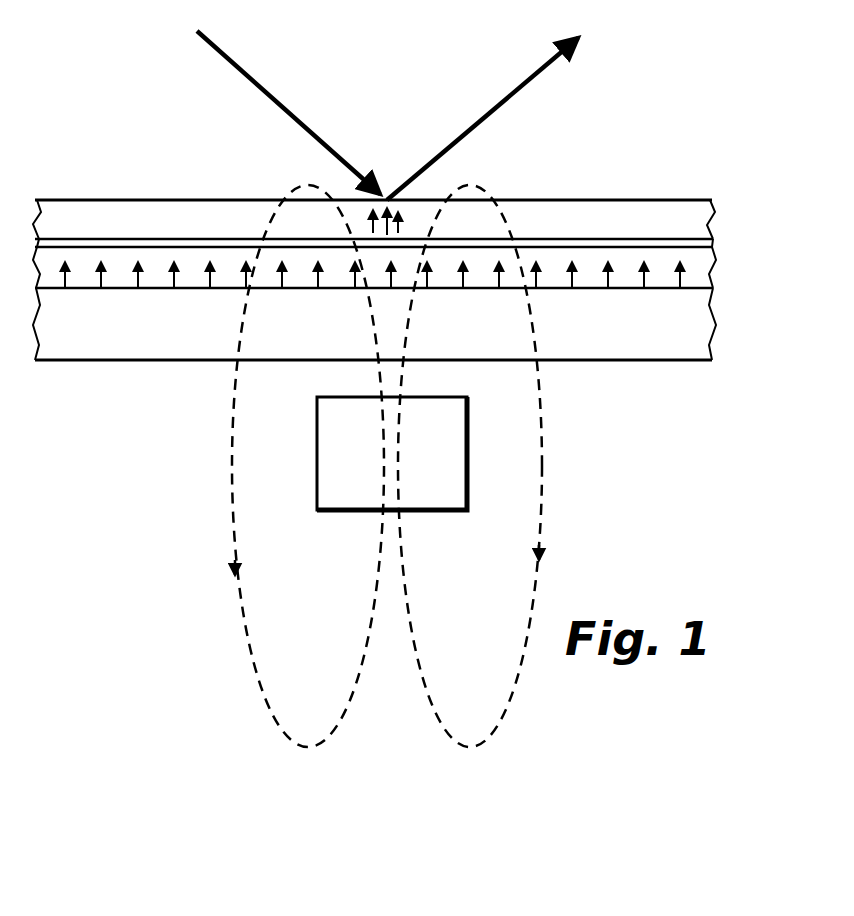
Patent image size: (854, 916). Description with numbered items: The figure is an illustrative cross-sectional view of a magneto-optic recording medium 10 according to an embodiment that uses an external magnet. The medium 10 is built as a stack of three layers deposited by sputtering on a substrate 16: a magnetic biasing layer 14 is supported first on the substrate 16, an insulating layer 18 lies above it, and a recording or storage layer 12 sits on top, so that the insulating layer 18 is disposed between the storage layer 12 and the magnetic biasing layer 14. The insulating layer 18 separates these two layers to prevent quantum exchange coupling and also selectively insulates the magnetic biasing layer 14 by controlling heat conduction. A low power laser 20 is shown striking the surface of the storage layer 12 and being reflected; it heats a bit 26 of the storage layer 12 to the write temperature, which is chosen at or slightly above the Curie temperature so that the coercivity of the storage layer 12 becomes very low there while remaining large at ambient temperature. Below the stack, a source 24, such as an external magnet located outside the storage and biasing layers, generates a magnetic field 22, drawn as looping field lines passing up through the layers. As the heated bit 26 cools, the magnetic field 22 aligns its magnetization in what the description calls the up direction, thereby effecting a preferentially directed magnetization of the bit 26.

The magneto-optic recording medium 10 is at (498, 163).
The recording or storage layer 12 is at (695, 215).
The magnetic biasing layer 14 is at (712, 270).
The substrate 16 is at (695, 325).
The insulating layer 18 is at (714, 247).
The low power laser 20 is at (243, 63).
The magnetic field 22 is at (541, 405).
The source 24 is at (443, 457).
The bit 26 is at (387, 195).